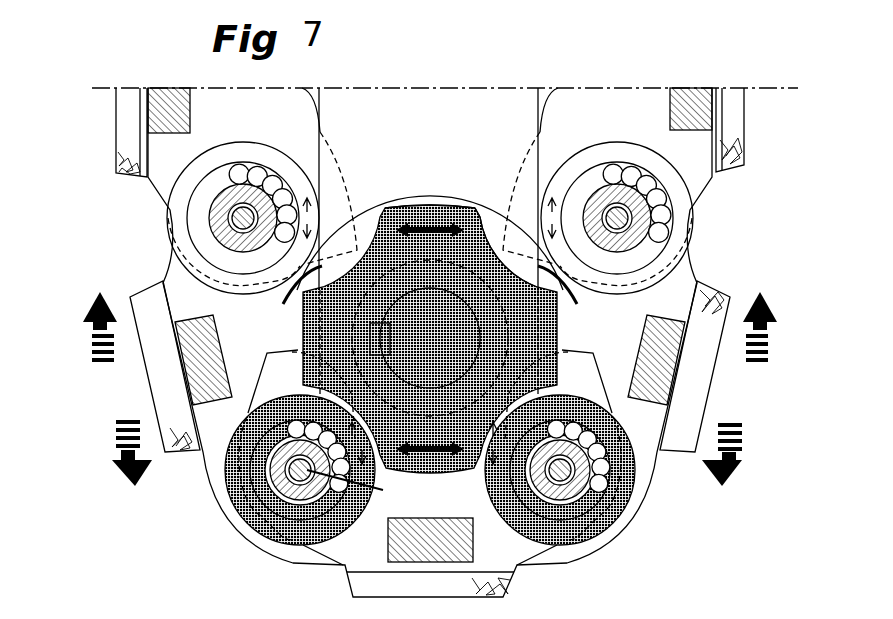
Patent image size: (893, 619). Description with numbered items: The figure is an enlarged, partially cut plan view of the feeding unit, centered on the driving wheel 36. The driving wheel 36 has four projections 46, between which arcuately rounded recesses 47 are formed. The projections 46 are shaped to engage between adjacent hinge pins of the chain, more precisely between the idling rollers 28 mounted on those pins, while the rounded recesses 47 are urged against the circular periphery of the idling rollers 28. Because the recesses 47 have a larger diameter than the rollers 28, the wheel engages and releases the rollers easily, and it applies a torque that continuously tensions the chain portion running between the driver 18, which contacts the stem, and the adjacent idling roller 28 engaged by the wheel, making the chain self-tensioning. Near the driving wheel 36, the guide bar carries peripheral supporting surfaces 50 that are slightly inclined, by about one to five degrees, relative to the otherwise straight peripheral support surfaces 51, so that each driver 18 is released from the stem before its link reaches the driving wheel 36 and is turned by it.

The driver 18 is at (737, 120).
The idling roller 28 is at (257, 533).
The driving wheel 36 is at (443, 205).
The projection 46 is at (553, 327).
The arcuately rounded recess 47 is at (484, 236).
The peripheral supporting surface 50 is at (300, 290).
The straight peripheral support surface 51 is at (318, 110).